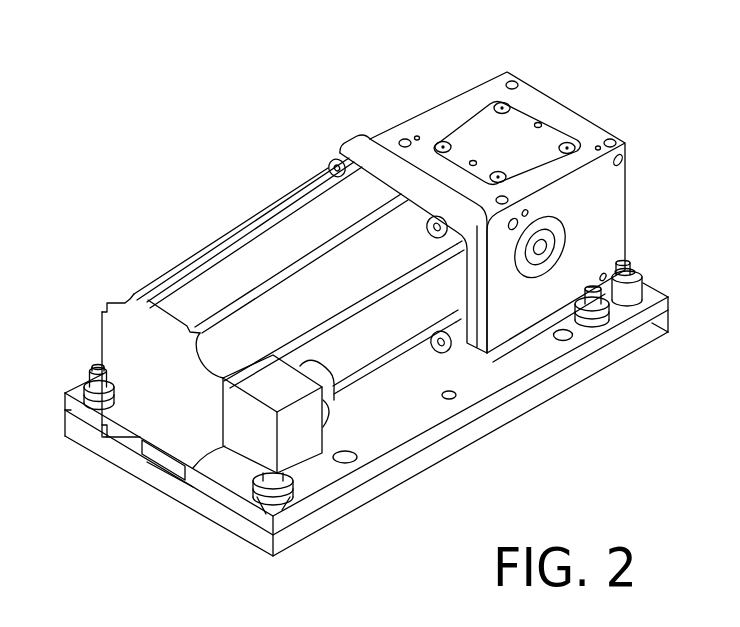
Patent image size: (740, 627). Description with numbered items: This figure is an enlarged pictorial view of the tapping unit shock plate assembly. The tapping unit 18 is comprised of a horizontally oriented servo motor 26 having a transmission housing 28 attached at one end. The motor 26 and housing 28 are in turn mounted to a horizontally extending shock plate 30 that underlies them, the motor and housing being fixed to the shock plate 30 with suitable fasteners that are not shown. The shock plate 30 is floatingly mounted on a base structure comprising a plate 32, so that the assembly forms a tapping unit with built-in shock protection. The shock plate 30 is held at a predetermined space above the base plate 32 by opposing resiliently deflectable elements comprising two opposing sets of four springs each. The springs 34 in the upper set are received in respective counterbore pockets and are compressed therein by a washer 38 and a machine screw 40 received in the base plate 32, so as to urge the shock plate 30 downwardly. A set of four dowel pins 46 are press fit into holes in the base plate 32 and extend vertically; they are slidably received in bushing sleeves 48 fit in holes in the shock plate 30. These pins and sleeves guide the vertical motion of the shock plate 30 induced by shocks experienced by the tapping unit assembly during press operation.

The tapping unit 18 is at (243, 186).
The servo motor 26 is at (92, 330).
The transmission housing 28 is at (537, 87).
The shock plate 30 is at (236, 498).
The base plate 32 is at (343, 511).
The springs 34 is at (116, 410).
The washer 38 is at (97, 406).
The machine screw 40 is at (94, 368).
The dowel pins 46 is at (627, 266).
The bushing sleeves 48 is at (320, 466).